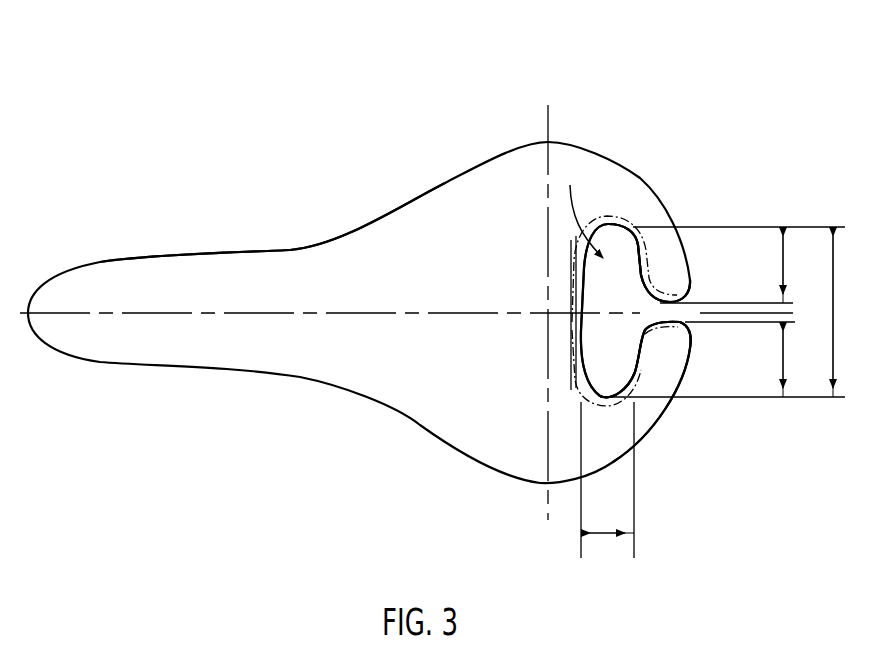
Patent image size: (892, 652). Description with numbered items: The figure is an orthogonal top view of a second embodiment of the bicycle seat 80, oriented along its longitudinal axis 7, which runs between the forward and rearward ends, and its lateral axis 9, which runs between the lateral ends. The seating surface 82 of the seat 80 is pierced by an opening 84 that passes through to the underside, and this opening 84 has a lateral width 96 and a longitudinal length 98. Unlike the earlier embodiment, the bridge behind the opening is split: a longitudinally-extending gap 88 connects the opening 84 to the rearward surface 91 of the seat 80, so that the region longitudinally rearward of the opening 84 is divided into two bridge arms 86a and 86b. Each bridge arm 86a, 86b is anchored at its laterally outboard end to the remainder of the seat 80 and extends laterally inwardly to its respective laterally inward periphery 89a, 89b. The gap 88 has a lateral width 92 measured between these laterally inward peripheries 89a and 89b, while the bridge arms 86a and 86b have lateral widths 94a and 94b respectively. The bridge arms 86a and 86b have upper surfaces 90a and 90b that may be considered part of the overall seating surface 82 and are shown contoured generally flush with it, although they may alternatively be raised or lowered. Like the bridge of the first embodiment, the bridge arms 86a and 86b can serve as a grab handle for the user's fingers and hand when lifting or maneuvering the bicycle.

The longitudinal axis 7 is at (127, 313).
The lateral axis 9 is at (548, 187).
The seat 80 is at (183, 525).
The seating surface 82 is at (368, 272).
The opening 84 is at (570, 185).
The bridge arm 86a is at (665, 253).
The bridge arm 86b is at (668, 353).
The gap 88 is at (702, 313).
The laterally inward periphery 89a is at (697, 308).
The laterally inward periphery 89b is at (660, 318).
The upper surface 90a is at (688, 295).
The upper surface 90b is at (688, 335).
The rearward surface 91 is at (690, 350).
The lateral width of gap 92 is at (793, 313).
The lateral width of bridge arm 94a is at (786, 268).
The lateral width of bridge arm 94b is at (786, 365).
The lateral width of opening 96 is at (833, 310).
The longitudinal length of opening 98 is at (605, 533).